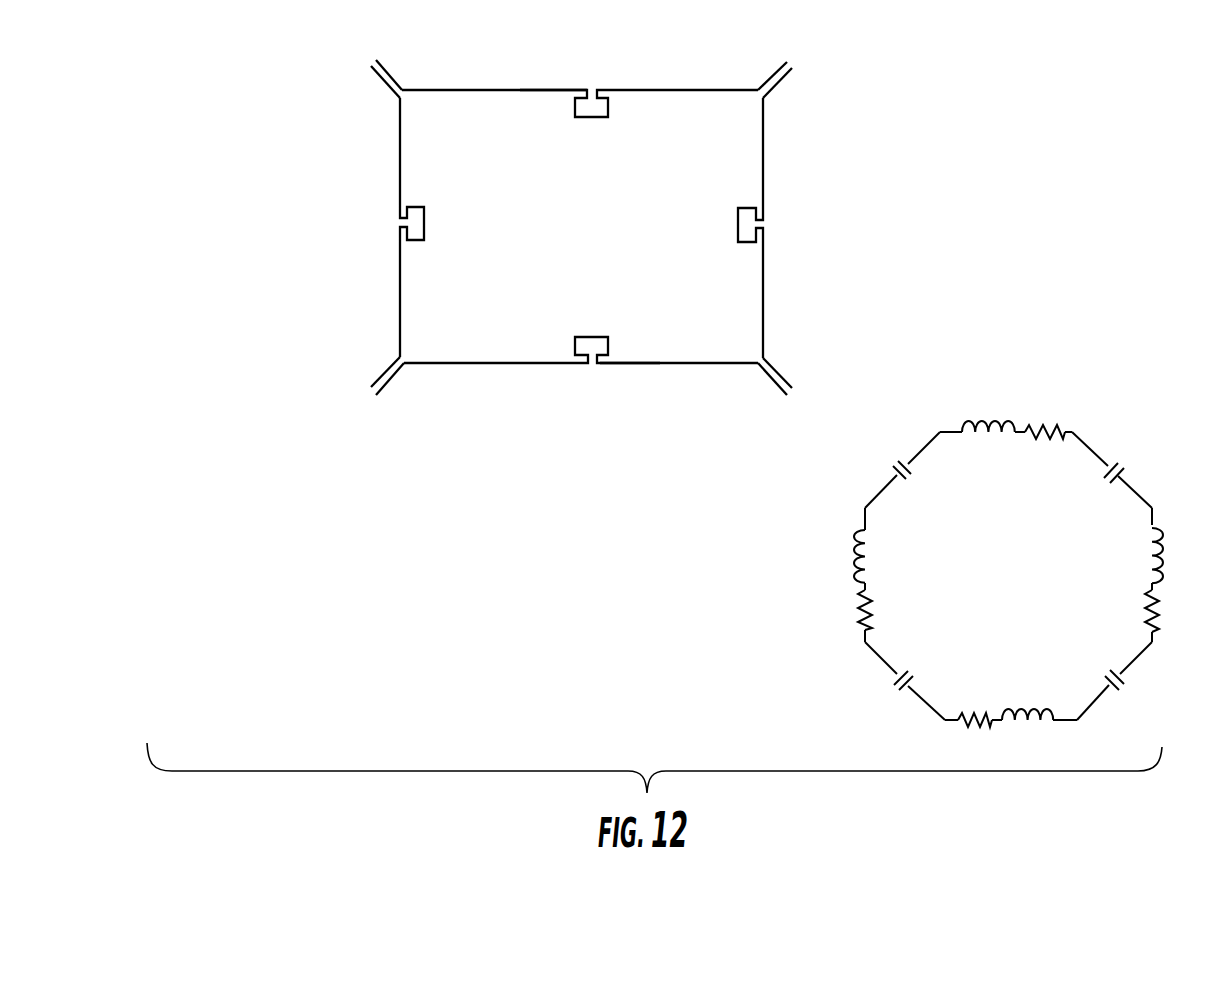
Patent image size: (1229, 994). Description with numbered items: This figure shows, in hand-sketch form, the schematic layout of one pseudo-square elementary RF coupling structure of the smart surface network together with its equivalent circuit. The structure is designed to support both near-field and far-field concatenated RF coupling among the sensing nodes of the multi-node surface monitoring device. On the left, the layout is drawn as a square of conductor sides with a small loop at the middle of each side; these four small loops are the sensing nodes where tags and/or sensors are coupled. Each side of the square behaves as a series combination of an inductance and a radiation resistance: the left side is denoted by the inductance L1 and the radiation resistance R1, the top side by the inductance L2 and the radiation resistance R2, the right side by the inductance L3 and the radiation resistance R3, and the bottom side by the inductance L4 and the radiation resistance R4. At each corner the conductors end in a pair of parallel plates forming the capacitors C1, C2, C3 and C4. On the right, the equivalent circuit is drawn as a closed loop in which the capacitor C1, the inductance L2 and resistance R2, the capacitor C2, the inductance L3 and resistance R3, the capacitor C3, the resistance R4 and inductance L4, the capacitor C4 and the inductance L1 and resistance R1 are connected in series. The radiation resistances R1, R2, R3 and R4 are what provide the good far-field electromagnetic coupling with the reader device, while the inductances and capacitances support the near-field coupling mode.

The capacitor C1 is at (358, 84).
The capacitor C2 is at (788, 94).
The capacitor C3 is at (800, 372).
The capacitor C4 is at (396, 400).
The inductance L1 is at (388, 180).
The radiation resistance R1 is at (876, 612).
The inductance L2 is at (527, 86).
The radiation resistance R2 is at (1045, 416).
The inductance L3 is at (768, 185).
The radiation resistance R3 is at (1166, 612).
The inductance L4 is at (638, 393).
The radiation resistance R4 is at (975, 735).